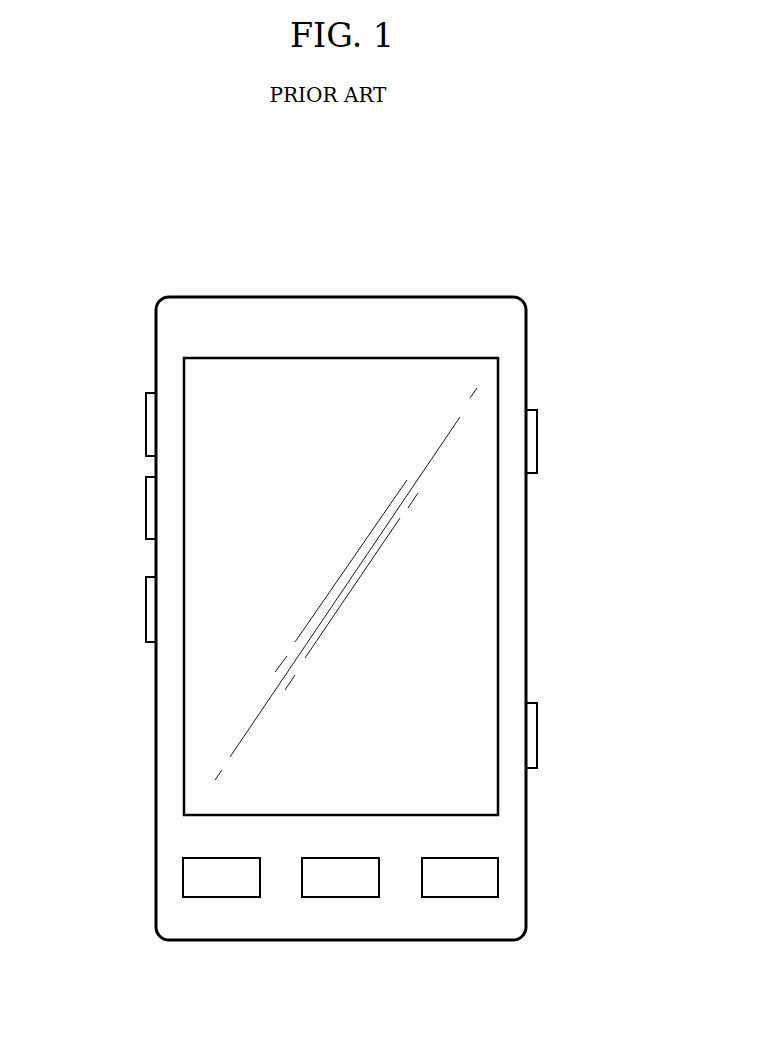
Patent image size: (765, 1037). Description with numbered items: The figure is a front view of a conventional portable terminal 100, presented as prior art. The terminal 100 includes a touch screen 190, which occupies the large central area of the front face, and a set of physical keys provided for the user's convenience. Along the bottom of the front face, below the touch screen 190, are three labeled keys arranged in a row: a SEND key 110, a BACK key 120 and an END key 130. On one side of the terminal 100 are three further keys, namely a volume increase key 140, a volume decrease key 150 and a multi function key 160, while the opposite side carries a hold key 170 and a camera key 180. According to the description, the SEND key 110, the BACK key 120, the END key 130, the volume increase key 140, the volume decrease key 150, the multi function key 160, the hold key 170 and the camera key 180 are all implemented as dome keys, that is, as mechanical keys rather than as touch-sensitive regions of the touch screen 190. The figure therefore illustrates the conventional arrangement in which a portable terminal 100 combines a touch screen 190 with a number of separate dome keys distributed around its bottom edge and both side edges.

The portable terminal 100 is at (422, 297).
The SEND key 110 is at (220, 897).
The BACK key 120 is at (339, 897).
The END key 130 is at (459, 897).
The volume increase key 140 is at (147, 420).
The volume decrease key 150 is at (147, 505).
The multi function key 160 is at (147, 605).
The hold key 170 is at (537, 440).
The camera key 180 is at (537, 735).
The touch screen 190 is at (500, 592).